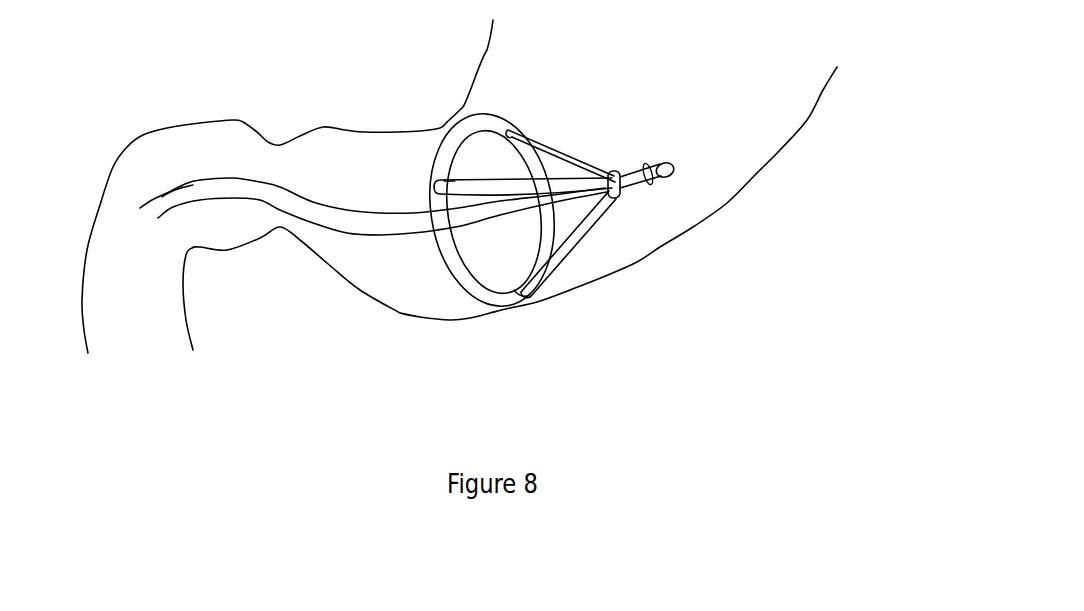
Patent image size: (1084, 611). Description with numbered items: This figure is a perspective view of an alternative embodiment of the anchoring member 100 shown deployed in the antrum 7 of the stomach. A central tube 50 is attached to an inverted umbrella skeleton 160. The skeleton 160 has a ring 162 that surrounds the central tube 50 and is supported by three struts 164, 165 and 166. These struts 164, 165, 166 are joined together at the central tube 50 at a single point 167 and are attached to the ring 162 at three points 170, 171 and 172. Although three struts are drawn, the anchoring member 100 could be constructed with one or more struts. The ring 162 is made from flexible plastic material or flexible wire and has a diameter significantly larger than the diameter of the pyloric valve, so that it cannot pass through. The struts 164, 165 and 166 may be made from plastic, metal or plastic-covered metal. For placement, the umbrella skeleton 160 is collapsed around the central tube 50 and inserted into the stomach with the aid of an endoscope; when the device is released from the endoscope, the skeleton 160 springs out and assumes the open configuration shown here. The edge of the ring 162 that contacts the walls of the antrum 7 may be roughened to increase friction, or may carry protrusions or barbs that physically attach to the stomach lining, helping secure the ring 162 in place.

The antrum 7 is at (407, 153).
The central tube 50 is at (312, 226).
The anchoring member 100 is at (617, 78).
The inverted umbrella skeleton 160 is at (597, 260).
The ring 162 is at (480, 308).
The strut 164 is at (540, 144).
The strut 165 is at (459, 180).
The strut 166 is at (588, 228).
The point 167 is at (613, 171).
The point 170 is at (510, 127).
The point 171 is at (433, 181).
The point 172 is at (517, 296).